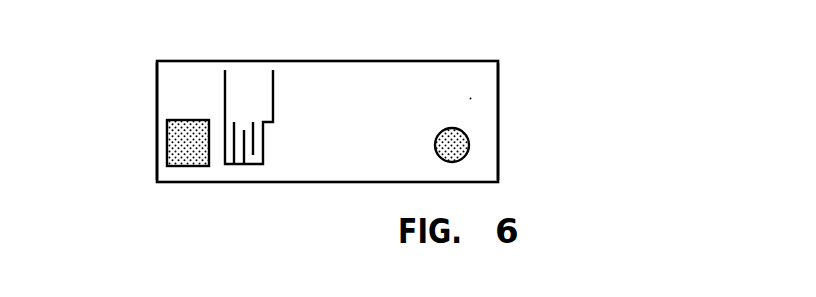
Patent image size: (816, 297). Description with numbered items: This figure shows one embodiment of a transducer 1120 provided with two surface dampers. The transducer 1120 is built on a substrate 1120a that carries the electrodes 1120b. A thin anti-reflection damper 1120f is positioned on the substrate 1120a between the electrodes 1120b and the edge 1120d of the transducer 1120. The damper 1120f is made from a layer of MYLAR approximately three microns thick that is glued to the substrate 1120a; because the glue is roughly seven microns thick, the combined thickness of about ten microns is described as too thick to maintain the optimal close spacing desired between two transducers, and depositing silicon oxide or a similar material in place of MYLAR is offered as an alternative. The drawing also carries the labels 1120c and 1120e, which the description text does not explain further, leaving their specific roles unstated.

The transducer 1120 is at (360, 60).
The substrate 1120a is at (470, 98).
The electrodes 1120b is at (248, 165).
The right edge 1120c is at (498, 120).
The edge 1120d is at (157, 103).
The circular contact pad 1120e is at (462, 150).
The anti-reflection damper 1120f is at (173, 157).